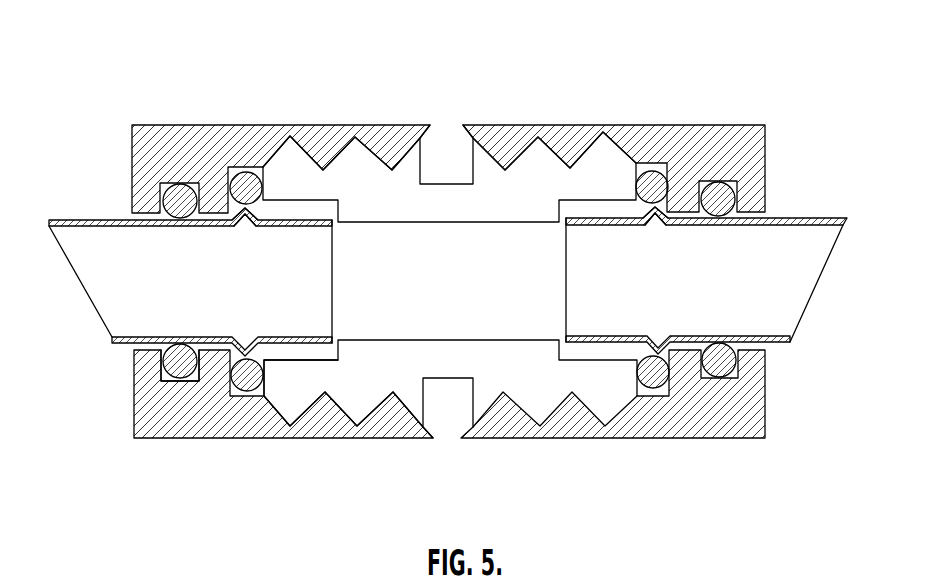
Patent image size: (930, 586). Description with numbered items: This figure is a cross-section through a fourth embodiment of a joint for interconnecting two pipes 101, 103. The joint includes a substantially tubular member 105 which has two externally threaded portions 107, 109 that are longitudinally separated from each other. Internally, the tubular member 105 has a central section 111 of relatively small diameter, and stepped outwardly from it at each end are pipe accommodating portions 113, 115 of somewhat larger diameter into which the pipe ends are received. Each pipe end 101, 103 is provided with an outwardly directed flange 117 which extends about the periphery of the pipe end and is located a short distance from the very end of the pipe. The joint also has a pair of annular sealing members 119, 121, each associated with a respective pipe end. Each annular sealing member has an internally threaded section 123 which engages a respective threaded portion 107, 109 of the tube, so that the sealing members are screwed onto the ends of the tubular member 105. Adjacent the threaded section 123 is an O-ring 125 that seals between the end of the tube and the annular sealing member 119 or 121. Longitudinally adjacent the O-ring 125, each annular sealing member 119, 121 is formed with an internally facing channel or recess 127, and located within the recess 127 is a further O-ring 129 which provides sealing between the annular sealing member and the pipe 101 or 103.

The pipe 101 is at (90, 220).
The pipe 103 is at (808, 218).
The tubular member 105 is at (365, 380).
The externally threaded portion 107 is at (354, 165).
The externally threaded portion 109 is at (601, 165).
The central section 111 is at (461, 283).
The pipe accommodating portion 113 is at (610, 352).
The pipe accommodating portion 115 is at (295, 352).
The outwardly directed flange 117 is at (240, 222).
The annular sealing member 119 is at (172, 150).
The annular sealing member 121 is at (708, 148).
The internally threaded section 123 is at (398, 413).
The O-ring 125 is at (242, 176).
The channel or recess 127 is at (165, 369).
The O-ring 129 is at (183, 368).